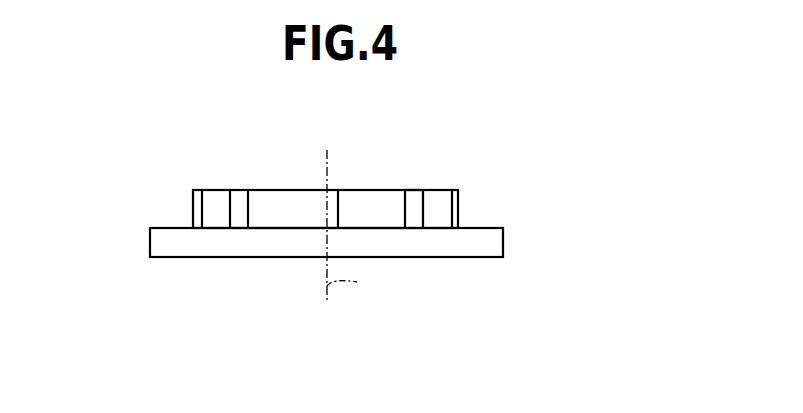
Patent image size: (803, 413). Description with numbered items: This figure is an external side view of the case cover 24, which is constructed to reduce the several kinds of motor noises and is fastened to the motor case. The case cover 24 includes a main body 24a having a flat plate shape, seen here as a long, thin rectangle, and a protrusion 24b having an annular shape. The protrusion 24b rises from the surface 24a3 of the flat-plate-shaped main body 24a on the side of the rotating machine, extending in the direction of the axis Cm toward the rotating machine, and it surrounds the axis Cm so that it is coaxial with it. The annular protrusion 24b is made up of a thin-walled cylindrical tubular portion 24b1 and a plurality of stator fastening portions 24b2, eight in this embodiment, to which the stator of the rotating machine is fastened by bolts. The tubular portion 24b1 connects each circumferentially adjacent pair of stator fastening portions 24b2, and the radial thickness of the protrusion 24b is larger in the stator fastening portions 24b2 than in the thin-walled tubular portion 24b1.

The case cover 24 is at (455, 138).
The main body 24a is at (418, 245).
The surface 24a3 is at (175, 227).
The protrusion 24b is at (463, 211).
The thin-walled cylindrical tubular portion 24b1 is at (291, 200).
The stator fastening portion 24b2 is at (417, 200).
The axis Cm is at (353, 228).